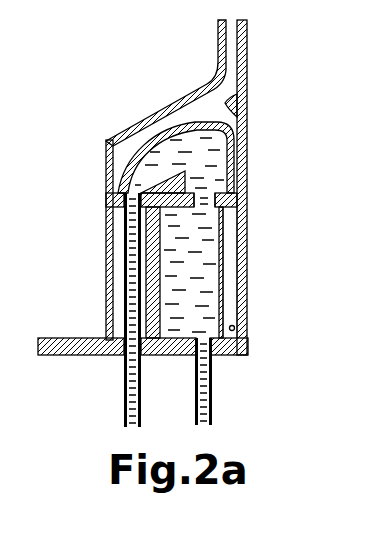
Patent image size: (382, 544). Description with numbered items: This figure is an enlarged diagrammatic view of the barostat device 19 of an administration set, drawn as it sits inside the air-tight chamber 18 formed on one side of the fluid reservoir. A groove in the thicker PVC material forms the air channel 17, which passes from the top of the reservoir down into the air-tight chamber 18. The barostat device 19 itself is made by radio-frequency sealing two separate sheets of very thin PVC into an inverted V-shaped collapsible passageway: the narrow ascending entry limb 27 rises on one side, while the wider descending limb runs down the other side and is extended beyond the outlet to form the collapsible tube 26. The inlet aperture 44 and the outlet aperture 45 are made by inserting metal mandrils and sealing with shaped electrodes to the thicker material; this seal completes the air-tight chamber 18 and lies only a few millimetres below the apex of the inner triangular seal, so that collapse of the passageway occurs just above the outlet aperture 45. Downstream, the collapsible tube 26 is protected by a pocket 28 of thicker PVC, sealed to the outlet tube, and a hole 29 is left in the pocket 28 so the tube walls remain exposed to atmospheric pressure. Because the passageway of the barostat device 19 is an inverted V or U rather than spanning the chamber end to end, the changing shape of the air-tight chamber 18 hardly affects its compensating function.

The air channel 17 is at (228, 55).
The air-tight chamber 18 is at (198, 105).
The barostat device 19 is at (175, 155).
The inlet aperture 44 is at (132, 195).
The outlet aperture 45 is at (207, 193).
The pocket 28 is at (227, 233).
The ascending entry limb 27 is at (133, 257).
The collapsible tube 26 is at (190, 274).
The hole 29 is at (145, 357).